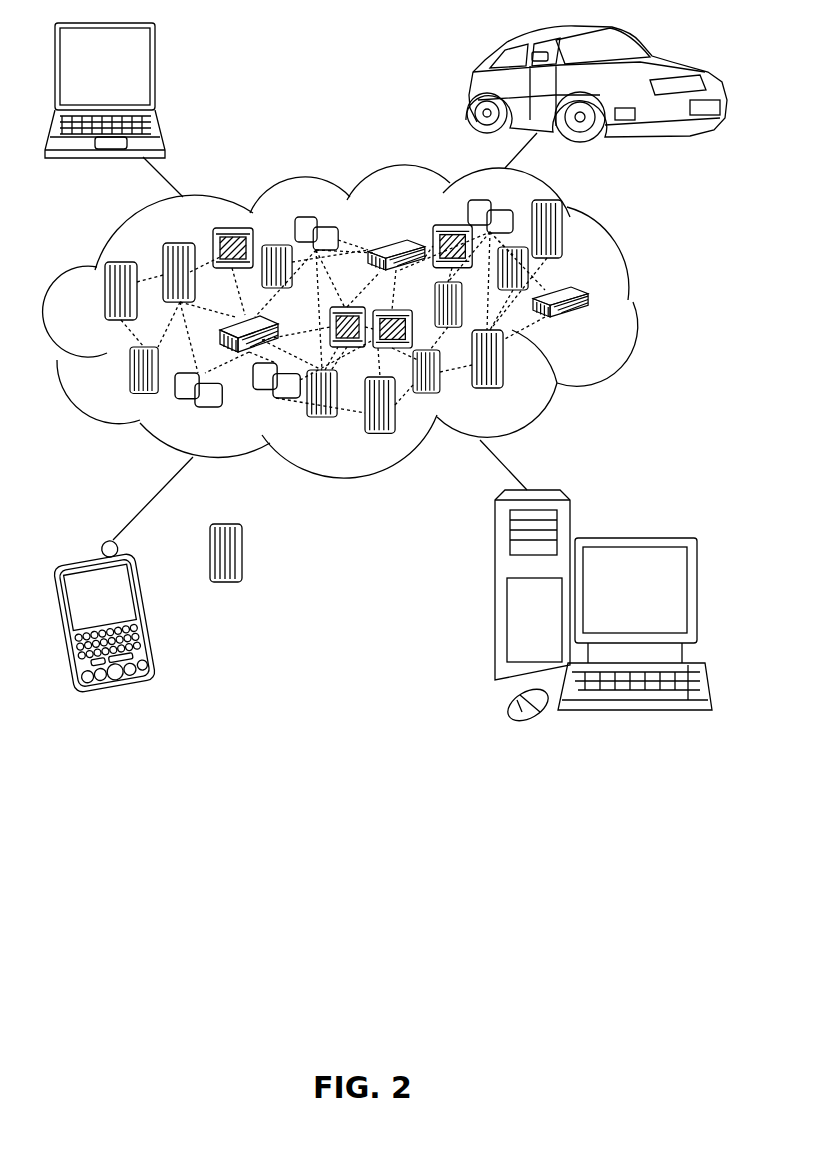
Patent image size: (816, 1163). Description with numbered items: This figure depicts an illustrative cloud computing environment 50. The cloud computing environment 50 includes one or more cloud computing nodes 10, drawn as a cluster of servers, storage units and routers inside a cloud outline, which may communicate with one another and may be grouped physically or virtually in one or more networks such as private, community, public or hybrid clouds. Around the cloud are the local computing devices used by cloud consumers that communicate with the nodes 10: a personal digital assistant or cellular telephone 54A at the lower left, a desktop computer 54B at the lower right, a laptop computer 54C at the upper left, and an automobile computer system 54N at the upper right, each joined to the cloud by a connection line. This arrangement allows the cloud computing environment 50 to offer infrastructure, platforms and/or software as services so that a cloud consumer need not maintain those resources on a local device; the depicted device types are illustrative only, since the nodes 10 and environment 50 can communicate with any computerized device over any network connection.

The cloud computing nodes 10 is at (590, 322).
The cloud computing environment 50 is at (630, 298).
The personal digital assistant or cellular telephone 54A is at (143, 617).
The desktop computer 54B is at (632, 533).
The laptop computer 54C is at (155, 72).
The automobile computer system 54N is at (475, 88).